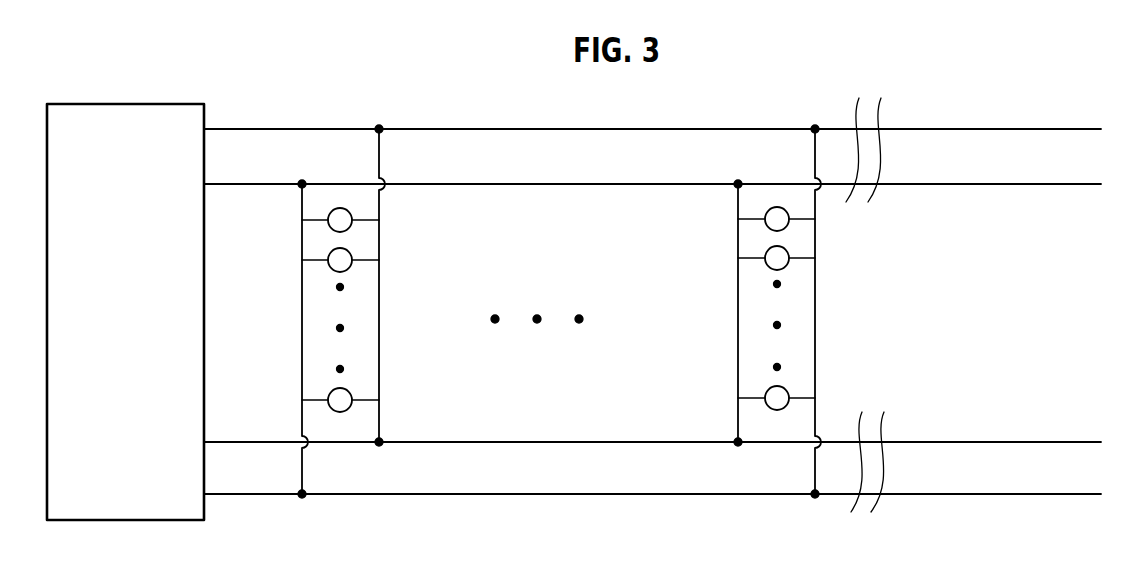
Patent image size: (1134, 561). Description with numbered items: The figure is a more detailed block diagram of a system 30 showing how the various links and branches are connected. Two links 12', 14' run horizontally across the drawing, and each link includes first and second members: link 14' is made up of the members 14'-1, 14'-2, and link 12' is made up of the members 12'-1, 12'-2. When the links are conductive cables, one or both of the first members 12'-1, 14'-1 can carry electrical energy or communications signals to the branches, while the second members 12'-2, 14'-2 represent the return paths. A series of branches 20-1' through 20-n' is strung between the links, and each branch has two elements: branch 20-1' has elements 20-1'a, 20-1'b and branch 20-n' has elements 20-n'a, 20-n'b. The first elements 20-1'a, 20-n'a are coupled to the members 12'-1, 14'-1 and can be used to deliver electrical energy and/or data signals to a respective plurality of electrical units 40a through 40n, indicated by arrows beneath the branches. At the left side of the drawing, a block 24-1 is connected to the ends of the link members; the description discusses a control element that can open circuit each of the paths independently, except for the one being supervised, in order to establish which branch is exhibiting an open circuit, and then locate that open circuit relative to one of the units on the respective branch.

The system 30 is at (1004, 73).
The control circuit 24-1 is at (149, 324).
The link 14' is at (652, 162).
The first member of link 14'-1 is at (652, 100).
The second member of link 14'-2 is at (652, 209).
The link 12' is at (652, 473).
The first member of link 12'-1 is at (652, 414).
The second member of link 12'-2 is at (652, 521).
The first element of branch 20-n'a is at (417, 258).
The second element of branch 20-n'b is at (265, 339).
The branch 20-n' is at (395, 310).
The first element of branch 20-1'a is at (854, 284).
The second element of branch 20-1'b is at (701, 313).
The branch 20-1' is at (835, 308).
The electrical unit 40n is at (341, 477).
The electrical unit 40a is at (781, 477).